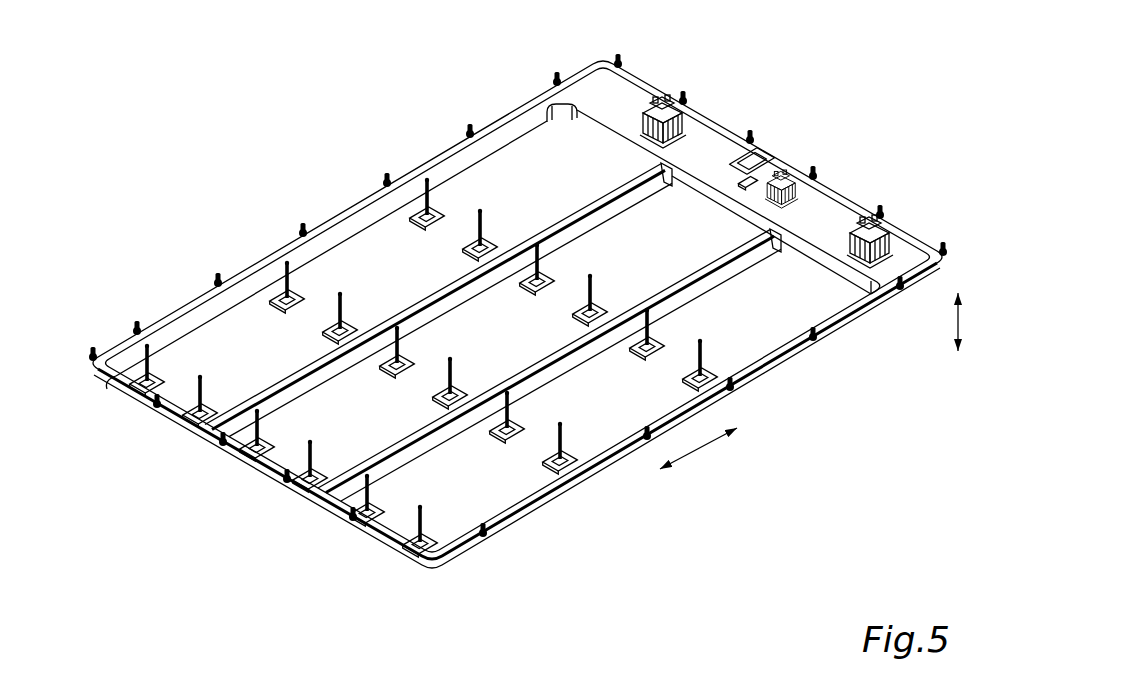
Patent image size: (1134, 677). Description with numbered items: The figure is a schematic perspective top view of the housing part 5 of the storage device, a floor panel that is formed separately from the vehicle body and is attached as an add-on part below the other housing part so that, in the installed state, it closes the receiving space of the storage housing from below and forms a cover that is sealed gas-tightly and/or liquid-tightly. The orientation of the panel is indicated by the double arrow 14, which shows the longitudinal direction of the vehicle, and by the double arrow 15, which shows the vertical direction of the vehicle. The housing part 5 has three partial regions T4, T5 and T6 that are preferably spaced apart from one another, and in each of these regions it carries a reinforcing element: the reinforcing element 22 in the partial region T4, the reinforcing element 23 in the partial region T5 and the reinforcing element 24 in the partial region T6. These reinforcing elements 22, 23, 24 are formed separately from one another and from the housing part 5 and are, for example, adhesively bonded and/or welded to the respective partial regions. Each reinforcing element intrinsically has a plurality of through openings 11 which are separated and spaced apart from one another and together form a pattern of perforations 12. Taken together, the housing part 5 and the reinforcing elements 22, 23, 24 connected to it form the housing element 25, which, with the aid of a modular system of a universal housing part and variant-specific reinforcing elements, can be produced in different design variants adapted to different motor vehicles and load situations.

The housing part 5 is at (594, 432).
The through openings 11 is at (177, 382).
The pattern of perforations 12 is at (247, 320).
The double arrow 14 is at (700, 450).
The double arrow 15 is at (957, 322).
The reinforcing element 22 is at (500, 178).
The reinforcing element 23 is at (706, 221).
The reinforcing element 24 is at (780, 318).
The housing element 25 is at (758, 120).
The partial region T4 is at (604, 123).
The partial region T5 is at (696, 184).
The partial region T6 is at (814, 249).